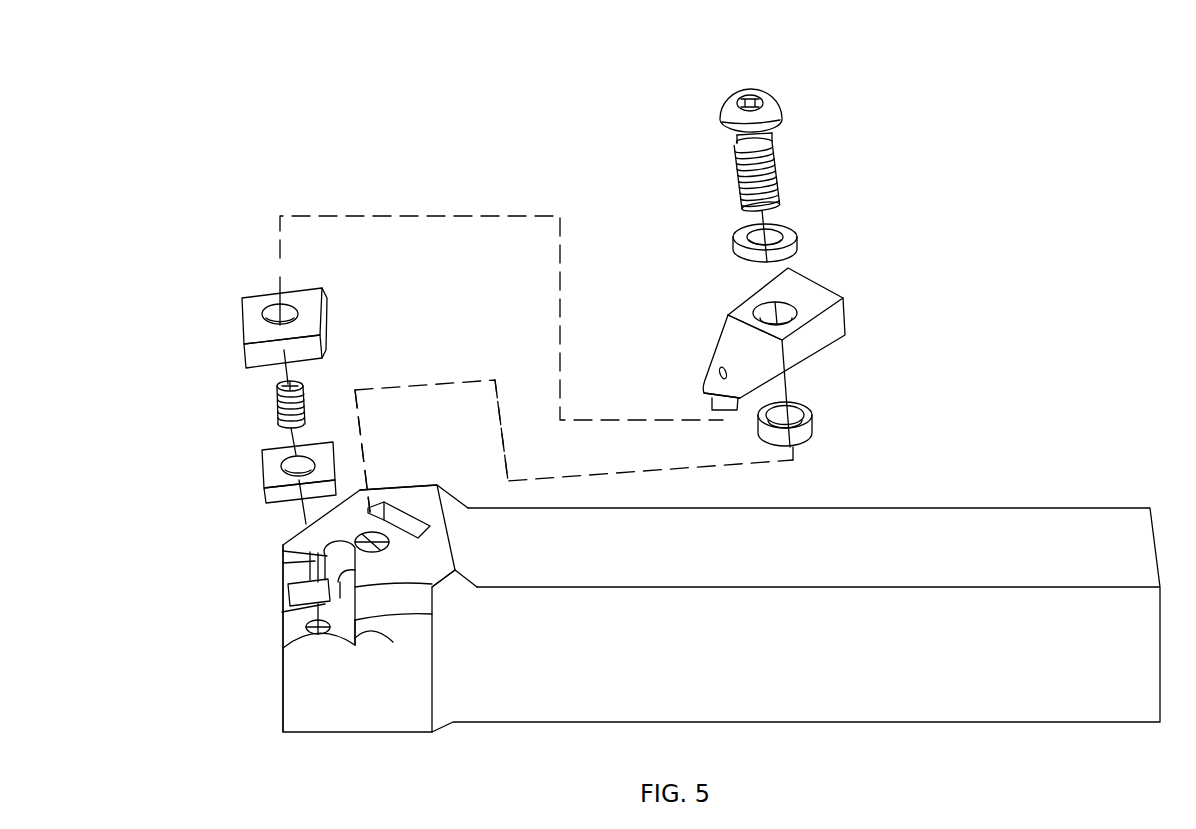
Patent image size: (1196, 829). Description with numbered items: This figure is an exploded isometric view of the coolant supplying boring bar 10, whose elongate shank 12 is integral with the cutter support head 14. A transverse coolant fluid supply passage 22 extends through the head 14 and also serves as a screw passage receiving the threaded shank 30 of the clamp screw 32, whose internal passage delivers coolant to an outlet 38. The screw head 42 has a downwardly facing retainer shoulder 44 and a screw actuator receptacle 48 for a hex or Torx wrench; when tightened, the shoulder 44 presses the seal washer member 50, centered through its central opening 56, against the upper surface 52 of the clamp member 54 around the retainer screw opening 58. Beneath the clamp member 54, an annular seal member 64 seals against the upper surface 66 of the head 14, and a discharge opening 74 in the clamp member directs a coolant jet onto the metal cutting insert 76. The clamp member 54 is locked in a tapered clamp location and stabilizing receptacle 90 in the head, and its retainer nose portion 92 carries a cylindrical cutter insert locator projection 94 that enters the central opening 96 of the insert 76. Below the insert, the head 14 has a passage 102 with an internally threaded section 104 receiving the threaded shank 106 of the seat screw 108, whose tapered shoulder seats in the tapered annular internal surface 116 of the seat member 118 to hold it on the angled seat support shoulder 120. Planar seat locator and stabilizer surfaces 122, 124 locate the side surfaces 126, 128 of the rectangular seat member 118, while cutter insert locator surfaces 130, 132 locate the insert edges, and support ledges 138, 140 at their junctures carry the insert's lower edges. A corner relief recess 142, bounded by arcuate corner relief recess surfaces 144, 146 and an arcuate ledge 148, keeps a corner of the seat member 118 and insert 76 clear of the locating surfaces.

The boring bar 10 is at (452, 170).
The elongate shank 12 is at (1012, 528).
The cutter support head 14 is at (441, 492).
The transverse coolant fluid supply passage 22 is at (307, 525).
The threaded shank 30 is at (781, 171).
The clamp screw 32 is at (784, 108).
The coolant fluid outlet 38 is at (737, 137).
The screw head 42 is at (726, 118).
The annular downwardly facing retainer shoulder 44 is at (781, 129).
The screw actuator receptacle 48 is at (749, 97).
The seal washer member 50 is at (742, 242).
The upper surface 52 is at (740, 311).
The clamp member 54 is at (816, 284).
The central opening 56 is at (776, 232).
The retainer screw opening 58 is at (763, 312).
The annular seal member 64 is at (806, 432).
The upper surface 66 is at (421, 492).
The discharge opening 74 is at (720, 372).
The metal cutting insert 76 is at (255, 333).
The clamp location and stabilizing receptacle 90 is at (380, 505).
The retainer nose portion 92 is at (710, 393).
The cutter insert locator projection 94 is at (707, 408).
The central opening 96 is at (263, 320).
The passage 102 is at (352, 643).
The internally threaded section 104 is at (302, 631).
The threaded shank 106 is at (278, 408).
The seat screw 108 is at (276, 388).
The tapered annular internal surface 116 is at (288, 461).
The seat member 118 is at (275, 482).
The seat support shoulder 120 is at (293, 650).
The seat locator and stabilizer surface 122 is at (308, 620).
The seat locator and stabilizer surface 124 is at (397, 648).
The side surface 126 is at (313, 435).
The side surface 128 is at (336, 452).
The cutter insert locator surface 130 is at (298, 572).
The cutter insert locator surface 132 is at (368, 597).
The support ledge 138 is at (302, 585).
The support ledge 140 is at (432, 616).
The corner relief recess 142 is at (430, 587).
The corner relief recess surface 144 is at (352, 578).
The corner relief recess surface 146 is at (300, 553).
The arcuate ledge 148 is at (390, 548).